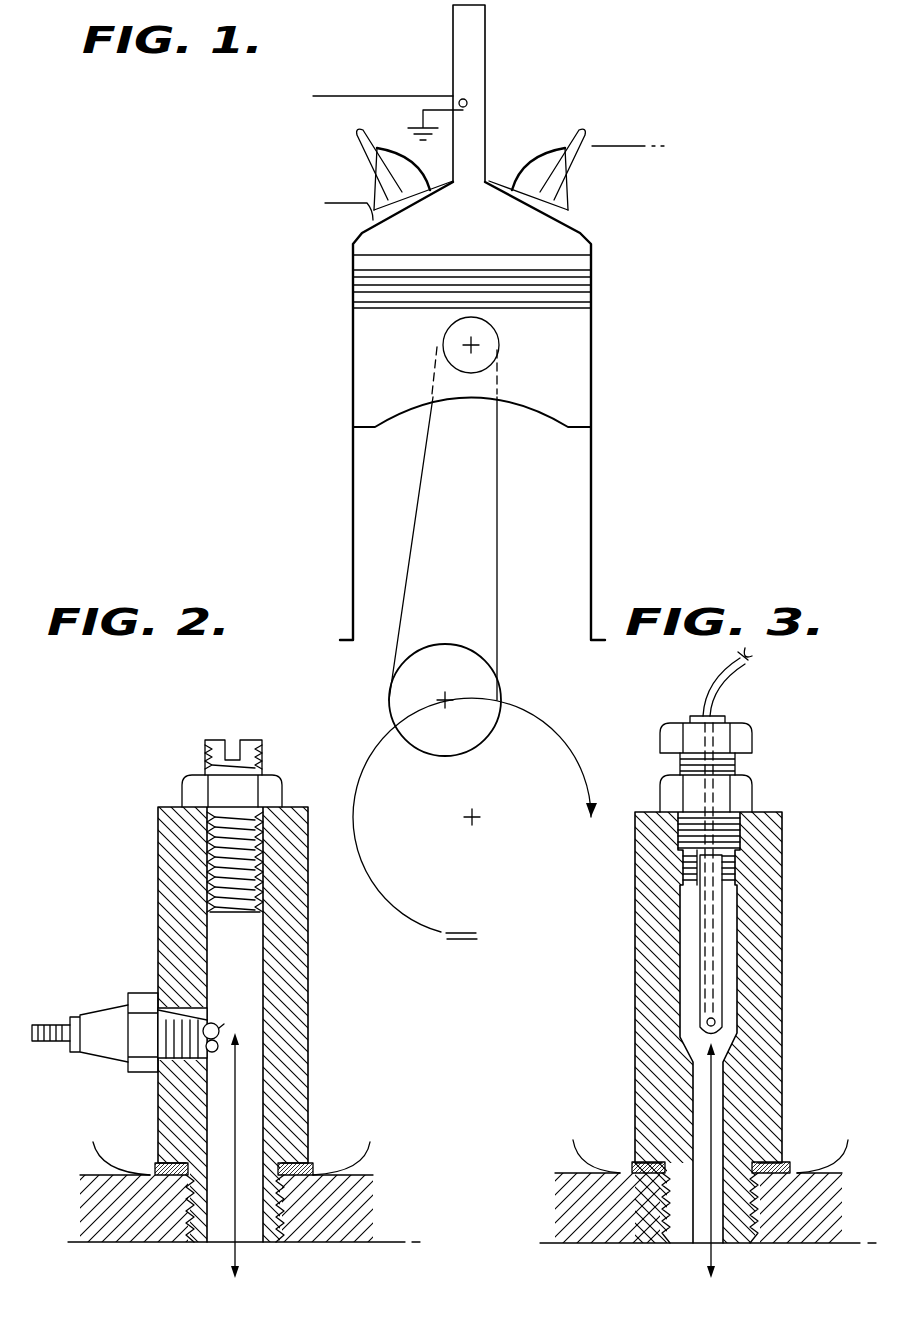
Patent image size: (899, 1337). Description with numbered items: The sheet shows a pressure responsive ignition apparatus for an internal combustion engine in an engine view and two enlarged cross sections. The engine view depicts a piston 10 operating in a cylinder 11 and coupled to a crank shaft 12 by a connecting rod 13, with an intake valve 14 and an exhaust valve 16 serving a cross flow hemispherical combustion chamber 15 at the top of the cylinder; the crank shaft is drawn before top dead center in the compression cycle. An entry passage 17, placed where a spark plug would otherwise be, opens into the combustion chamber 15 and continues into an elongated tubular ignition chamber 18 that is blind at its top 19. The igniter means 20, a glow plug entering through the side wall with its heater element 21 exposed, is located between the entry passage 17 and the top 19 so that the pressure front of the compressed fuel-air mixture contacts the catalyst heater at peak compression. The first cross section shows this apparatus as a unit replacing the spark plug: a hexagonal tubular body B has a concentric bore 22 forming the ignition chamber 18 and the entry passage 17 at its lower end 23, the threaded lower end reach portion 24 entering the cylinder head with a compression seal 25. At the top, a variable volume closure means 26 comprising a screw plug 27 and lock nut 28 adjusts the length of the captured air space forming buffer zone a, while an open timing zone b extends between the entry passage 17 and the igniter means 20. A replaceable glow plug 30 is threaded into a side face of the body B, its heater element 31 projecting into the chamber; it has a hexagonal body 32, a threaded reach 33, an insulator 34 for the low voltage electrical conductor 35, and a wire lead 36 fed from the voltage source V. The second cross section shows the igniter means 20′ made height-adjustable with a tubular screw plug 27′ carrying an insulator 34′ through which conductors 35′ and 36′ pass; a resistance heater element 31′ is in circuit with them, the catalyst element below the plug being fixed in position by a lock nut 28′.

In FIG. 1, the piston 10 is at (568, 352).
In FIG. 1, the cylinder 11 is at (585, 490).
In FIG. 1, the crank shaft 12 is at (481, 712).
In FIG. 1, the connecting rod 13 is at (500, 646).
In FIG. 1, the intake valve 14 is at (645, 203).
In FIG. 1, the combustion chamber 15 is at (480, 235).
In FIG. 2, the combustion chamber 15 is at (254, 1297).
In FIG. 3, the combustion chamber 15 is at (730, 1297).
In FIG. 1, the exhaust valve 16 is at (362, 222).
In FIG. 1, the entry passage 17 is at (471, 171).
In FIG. 2, the entry passage 17 is at (226, 1240).
In FIG. 3, the entry passage 17 is at (700, 1243).
In FIG. 1, the ignition chamber 18 is at (477, 73).
In FIG. 2, the ignition chamber 18 is at (250, 1048).
In FIG. 3, the ignition chamber 18 is at (735, 1037).
In FIG. 1, the top of ignition chamber 19 is at (475, 13).
In FIG. 2, the top of ignition chamber 19 is at (238, 912).
In FIG. 3, the top of ignition chamber 19 is at (725, 880).
In FIG. 1, the igniter means 20 is at (468, 100).
In FIG. 2, the igniter means 20 is at (224, 1024).
In FIG. 1, the heater element 21 is at (470, 115).
In FIG. 2, the bore 22 is at (262, 1082).
In FIG. 2, the lower end 23 is at (265, 1243).
In FIG. 3, the lower end 23 is at (745, 1245).
In FIG. 2, the lower end reach portion 24 is at (290, 1200).
In FIG. 2, the compression seal 25 is at (310, 1160).
In FIG. 2, the variable volume closure means 26 is at (247, 740).
In FIG. 2, the screw plug 27 is at (212, 860).
In FIG. 2, the lock nut 28 is at (190, 788).
In FIG. 2, the glow plug 30 is at (128, 992).
In FIG. 2, the heater element 31 is at (202, 1046).
In FIG. 2, the hexagonal body 32 is at (135, 1066).
In FIG. 2, the reach 33 is at (182, 1010).
In FIG. 2, the insulator 34 is at (98, 1010).
In FIG. 2, the low voltage electrical conductor 35 is at (46, 1045).
In FIG. 1, the wire lead 36 is at (379, 95).
In FIG. 3, the lock nut 28′ is at (758, 792).
In FIG. 3, the screw plug 27′ is at (740, 838).
In FIG. 3, the insulator 34′ is at (722, 968).
In FIG. 3, the conductor 35′ is at (705, 918).
In FIG. 3, the conductor 36′ is at (712, 940).
In FIG. 3, the igniter means 20′ is at (722, 1011).
In FIG. 3, the resistance heater element 31′ is at (705, 1023).
In FIG. 1, the buffer zone a is at (465, 49).
In FIG. 2, the buffer zone a is at (232, 950).
In FIG. 3, the buffer zone a is at (745, 910).
In FIG. 1, the open timing zone b is at (466, 157).
In FIG. 2, the open timing zone b is at (226, 1142).
In FIG. 3, the open timing zone b is at (720, 1111).
In FIG. 1, the voltage V is at (299, 96).
In FIG. 2, the tubular body B is at (157, 915).